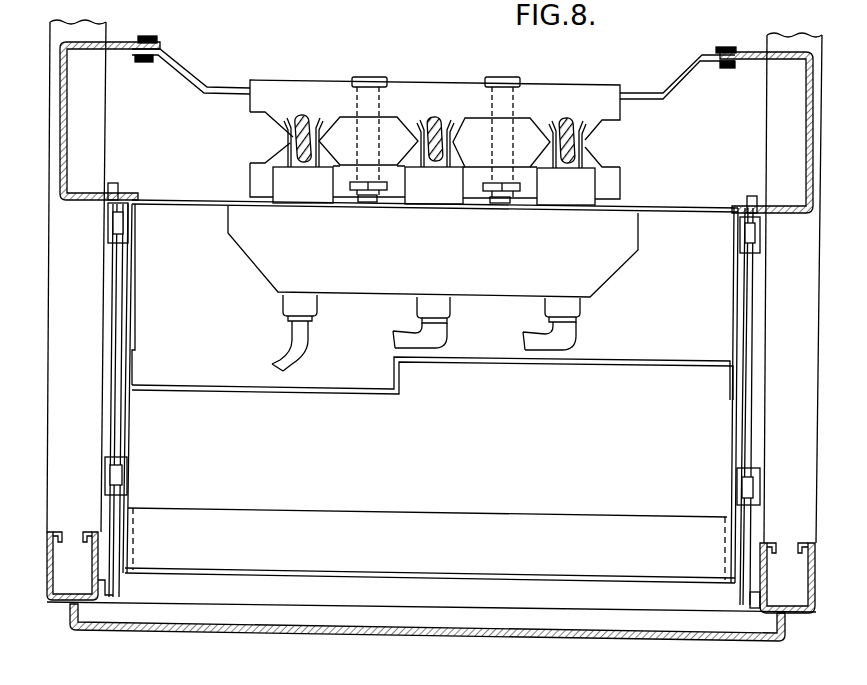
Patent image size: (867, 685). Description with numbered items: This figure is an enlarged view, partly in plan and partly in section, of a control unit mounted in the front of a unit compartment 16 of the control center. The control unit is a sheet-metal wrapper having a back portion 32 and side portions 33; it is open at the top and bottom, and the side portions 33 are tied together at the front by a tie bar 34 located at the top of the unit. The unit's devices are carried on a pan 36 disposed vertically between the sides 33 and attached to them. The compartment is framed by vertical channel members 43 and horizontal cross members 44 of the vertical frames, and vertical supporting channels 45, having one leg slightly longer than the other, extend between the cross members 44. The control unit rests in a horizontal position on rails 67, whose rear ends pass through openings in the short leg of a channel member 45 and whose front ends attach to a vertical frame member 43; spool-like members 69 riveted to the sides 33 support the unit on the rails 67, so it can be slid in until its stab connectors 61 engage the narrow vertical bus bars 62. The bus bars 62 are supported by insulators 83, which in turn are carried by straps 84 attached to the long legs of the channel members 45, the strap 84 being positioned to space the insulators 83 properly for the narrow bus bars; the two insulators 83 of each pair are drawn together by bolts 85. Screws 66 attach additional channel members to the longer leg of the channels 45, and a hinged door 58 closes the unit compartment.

The housing compartment 16 is at (193, 311).
The back portion 32 is at (196, 200).
The side portions 33 is at (133, 438).
The tie bar 34 is at (381, 511).
The pan 36 is at (358, 395).
The vertical channel members 43 is at (47, 580).
The horizontal cross members 44 is at (817, 402).
The vertical supporting channels 45 is at (62, 128).
The hinged doors 58 is at (233, 630).
The stab connectors 61 is at (321, 122).
The vertical bus bars 62 is at (300, 116).
The screws 66 is at (147, 63).
The rails 67 is at (108, 350).
The spool-like members 69 is at (108, 223).
The insulators 83 is at (250, 107).
The straps 84 is at (199, 73).
The bolts 85 is at (380, 77).